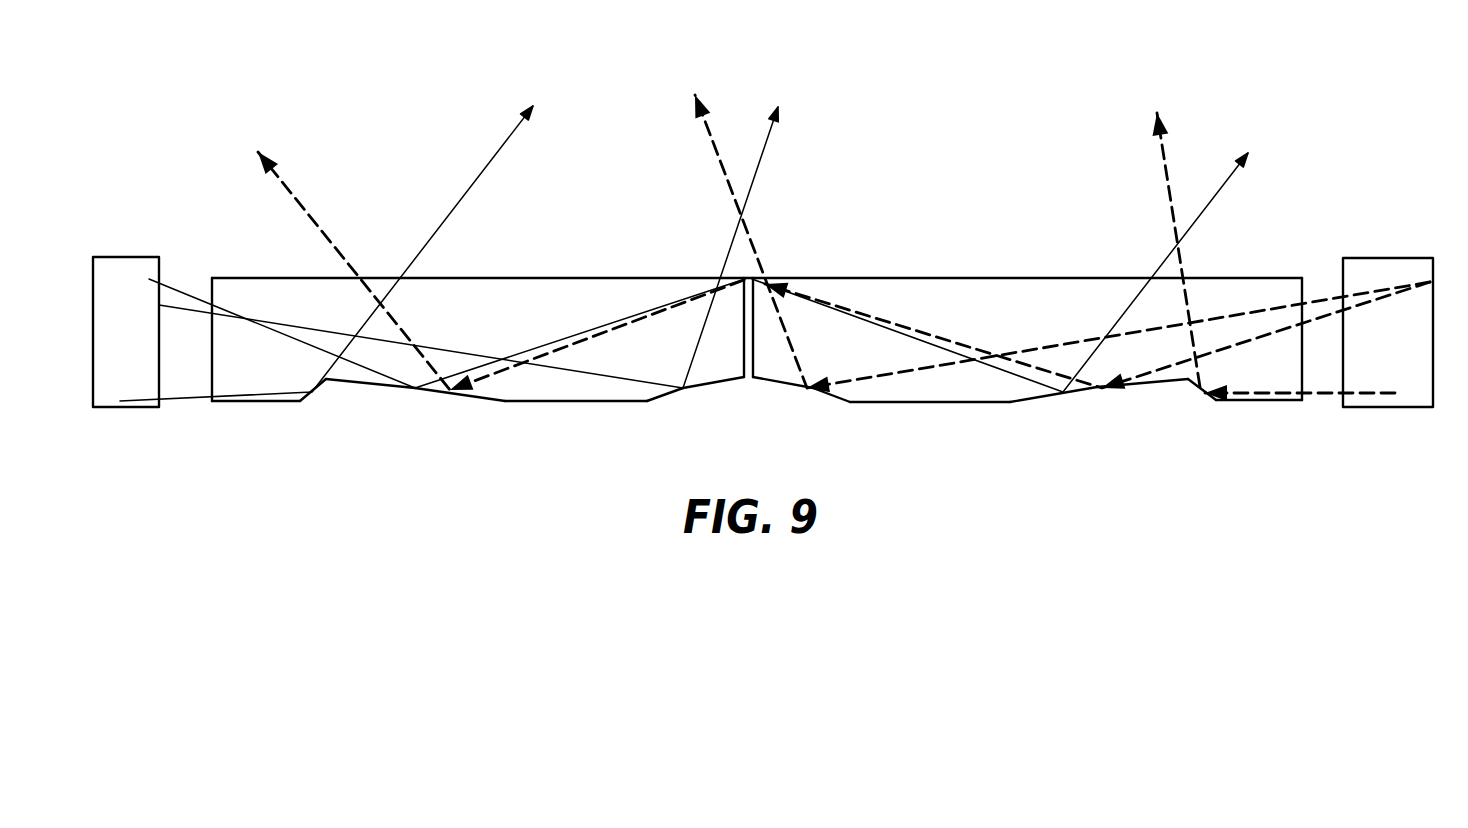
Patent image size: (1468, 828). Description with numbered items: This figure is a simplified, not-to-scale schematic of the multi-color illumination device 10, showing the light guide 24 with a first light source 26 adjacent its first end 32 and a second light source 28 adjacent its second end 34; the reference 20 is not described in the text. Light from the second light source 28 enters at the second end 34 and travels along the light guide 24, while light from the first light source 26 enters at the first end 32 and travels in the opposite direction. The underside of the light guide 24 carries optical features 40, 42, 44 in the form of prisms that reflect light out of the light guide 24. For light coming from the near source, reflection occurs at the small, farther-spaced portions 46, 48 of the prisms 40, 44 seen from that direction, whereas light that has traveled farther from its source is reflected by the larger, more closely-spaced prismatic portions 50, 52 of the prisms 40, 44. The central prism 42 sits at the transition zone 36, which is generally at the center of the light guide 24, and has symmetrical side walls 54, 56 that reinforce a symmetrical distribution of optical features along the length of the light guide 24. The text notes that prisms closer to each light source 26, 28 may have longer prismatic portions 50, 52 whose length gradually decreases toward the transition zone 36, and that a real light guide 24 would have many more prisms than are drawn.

The multi-color illumination device 10 is at (1247, 60).
The light guide assembly 20 is at (1300, 108).
The light guide 24 is at (1245, 290).
The first light source 26 is at (1408, 264).
The second light source 28 is at (112, 278).
The first end 32 is at (1302, 365).
The second end 34 is at (212, 295).
The transition zone 36 is at (744, 337).
The optical feature 40 is at (342, 383).
The central prism 42 is at (718, 384).
The optical feature 44 is at (1140, 385).
The small prismatic portion 46 is at (312, 392).
The small prismatic portion 48 is at (1198, 383).
The prismatic portion 50 is at (422, 393).
The prismatic portion 52 is at (1118, 392).
The side wall 54 is at (690, 395).
The side wall 56 is at (818, 393).